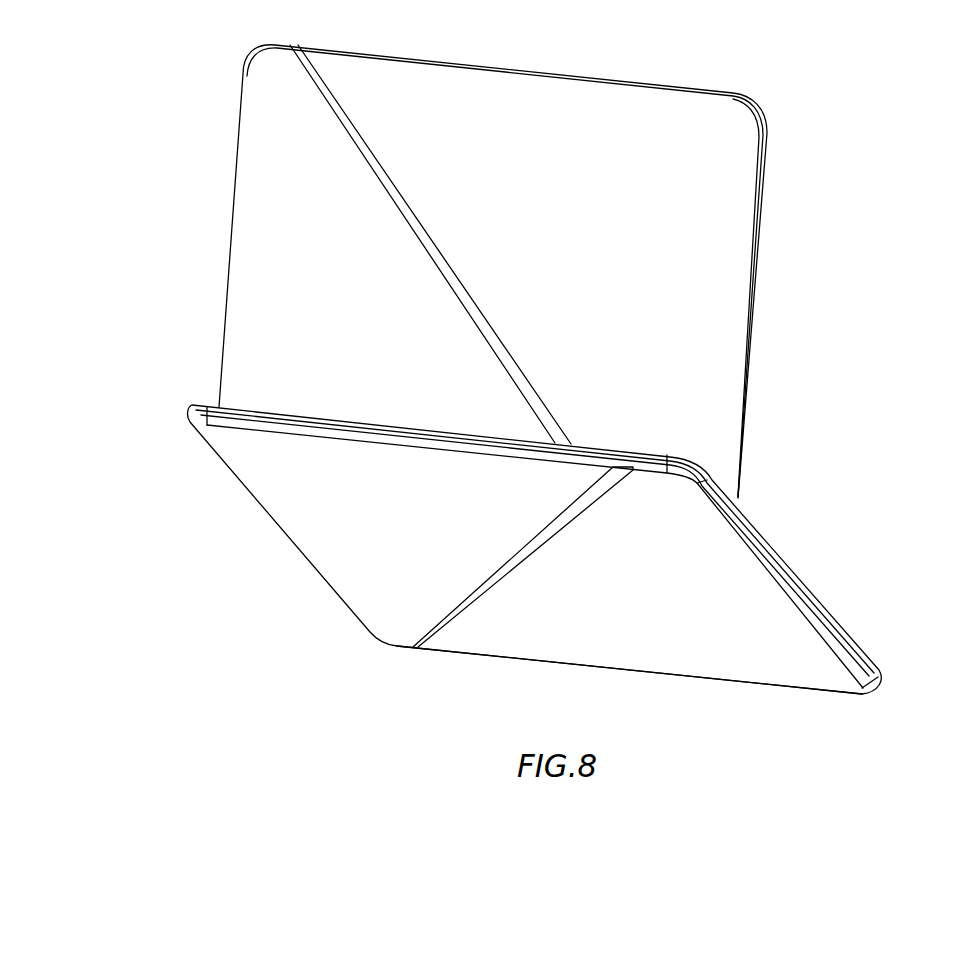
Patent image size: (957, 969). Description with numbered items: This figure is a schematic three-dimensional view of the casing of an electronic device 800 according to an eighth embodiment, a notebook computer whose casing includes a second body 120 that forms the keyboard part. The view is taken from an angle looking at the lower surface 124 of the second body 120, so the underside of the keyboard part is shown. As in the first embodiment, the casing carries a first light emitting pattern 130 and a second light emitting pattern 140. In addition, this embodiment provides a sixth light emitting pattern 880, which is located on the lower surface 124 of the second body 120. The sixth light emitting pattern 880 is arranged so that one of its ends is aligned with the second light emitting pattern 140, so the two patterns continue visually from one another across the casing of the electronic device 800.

The electronic device 800 is at (169, 185).
The first light emitting pattern 130 is at (420, 233).
The second light emitting pattern 140 is at (630, 452).
The second body 120 is at (342, 588).
The lower surface 124 is at (722, 668).
The sixth light emitting pattern 880 is at (543, 533).